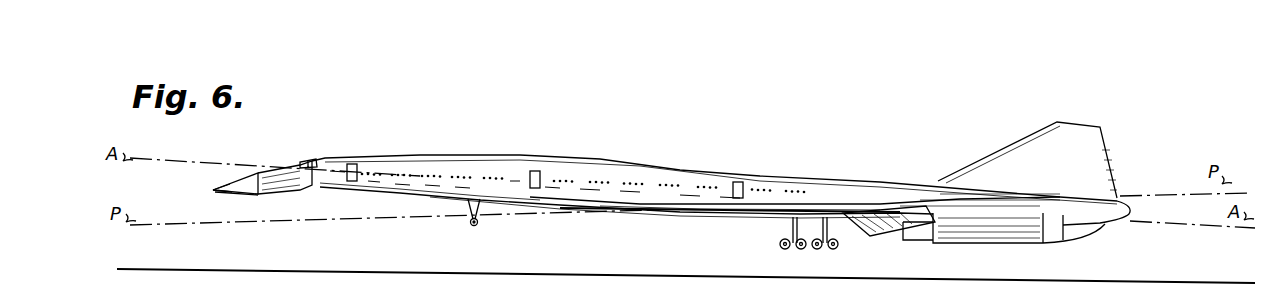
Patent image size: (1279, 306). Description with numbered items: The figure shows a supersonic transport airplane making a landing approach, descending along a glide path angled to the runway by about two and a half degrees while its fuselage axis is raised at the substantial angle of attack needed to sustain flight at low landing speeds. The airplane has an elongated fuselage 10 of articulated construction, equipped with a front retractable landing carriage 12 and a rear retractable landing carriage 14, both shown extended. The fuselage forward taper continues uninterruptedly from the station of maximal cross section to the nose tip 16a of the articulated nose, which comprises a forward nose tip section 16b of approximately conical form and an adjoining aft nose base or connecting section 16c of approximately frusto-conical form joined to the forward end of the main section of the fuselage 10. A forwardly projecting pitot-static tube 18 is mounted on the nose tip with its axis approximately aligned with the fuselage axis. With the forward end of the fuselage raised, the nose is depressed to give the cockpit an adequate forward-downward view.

The fuselage 10 is at (340, 156).
The front retractable landing carriage 12 is at (476, 224).
The rear retractable landing carriage 14 is at (792, 248).
The nose tip 16a is at (216, 184).
The forward nose tip section 16b is at (228, 206).
The aft nose base section 16c is at (279, 172).
The pitot-static tube 18 is at (213, 190).